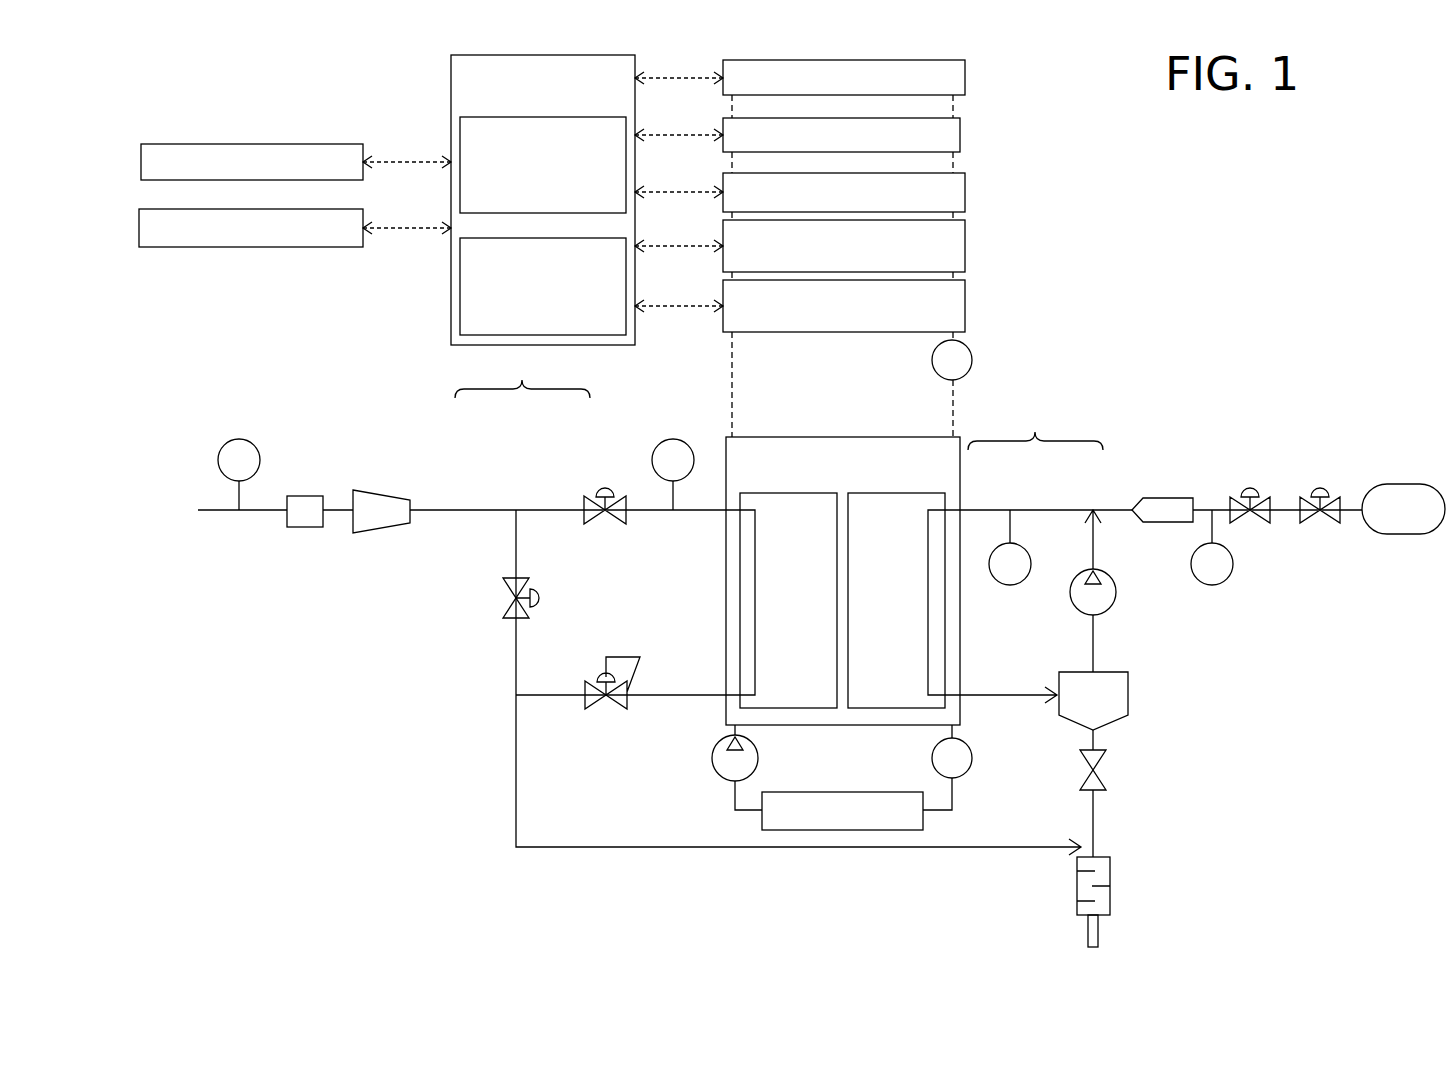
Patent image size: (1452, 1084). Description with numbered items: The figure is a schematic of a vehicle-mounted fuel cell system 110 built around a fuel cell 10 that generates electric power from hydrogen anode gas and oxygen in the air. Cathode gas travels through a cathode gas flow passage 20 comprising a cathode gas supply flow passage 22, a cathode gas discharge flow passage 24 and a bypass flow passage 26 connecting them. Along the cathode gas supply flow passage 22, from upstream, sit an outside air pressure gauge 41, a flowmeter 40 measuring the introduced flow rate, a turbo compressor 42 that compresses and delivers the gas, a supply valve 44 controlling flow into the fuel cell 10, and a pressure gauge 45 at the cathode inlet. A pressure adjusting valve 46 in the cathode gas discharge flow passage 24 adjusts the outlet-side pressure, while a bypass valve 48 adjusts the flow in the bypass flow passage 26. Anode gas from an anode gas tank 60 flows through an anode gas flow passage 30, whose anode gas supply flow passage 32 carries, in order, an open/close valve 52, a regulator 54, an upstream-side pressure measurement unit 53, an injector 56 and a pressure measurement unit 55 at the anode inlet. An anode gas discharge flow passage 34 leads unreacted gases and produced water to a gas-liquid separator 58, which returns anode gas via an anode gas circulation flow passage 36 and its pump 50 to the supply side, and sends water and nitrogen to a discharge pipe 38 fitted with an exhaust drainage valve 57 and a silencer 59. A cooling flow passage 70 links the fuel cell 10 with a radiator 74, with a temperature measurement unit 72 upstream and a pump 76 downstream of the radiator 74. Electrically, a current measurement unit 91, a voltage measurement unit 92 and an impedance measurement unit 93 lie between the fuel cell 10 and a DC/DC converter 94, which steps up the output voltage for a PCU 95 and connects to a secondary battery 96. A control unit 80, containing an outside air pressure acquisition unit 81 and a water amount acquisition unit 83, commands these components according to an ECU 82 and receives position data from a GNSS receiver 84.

The fuel cell 10 is at (840, 437).
The cathode gas flow passage 20 is at (522, 373).
The cathode gas supply flow passage 22 is at (516, 510).
The cathode gas discharge flow passage 24 is at (575, 693).
The bypass flow passage 26 is at (514, 547).
The anode gas flow passage 30 is at (1035, 425).
The anode gas supply flow passage 32 is at (1032, 510).
The anode gas discharge flow passage 34 is at (977, 693).
The anode gas circulation flow passage 36 is at (1090, 547).
The discharge pipe 38 is at (1100, 928).
The flowmeter 40 is at (305, 496).
The outside air pressure gauge 41 is at (240, 439).
The turbo compressor 42 is at (382, 490).
The supply valve 44 is at (605, 488).
The pressure gauge 45 is at (673, 439).
The pressure adjusting valve 46 is at (600, 677).
The bypass valve 48 is at (503, 603).
The pump 50 is at (1110, 575).
The open/close valve 52 is at (1320, 487).
The upstream-side pressure measurement unit 53 is at (1212, 585).
The regulator 54 is at (1250, 487).
The pressure measurement unit 55 is at (1010, 585).
The injector 56 is at (1168, 497).
The exhaust drainage valve 57 is at (1106, 780).
The gas-liquid separator 58 is at (1130, 692).
The silencer 59 is at (1112, 880).
The anode gas tank 60 is at (1400, 484).
The cooling flow passage 70 is at (926, 814).
The temperature measurement unit 72 is at (973, 757).
The radiator 74 is at (790, 792).
The pump 76 is at (711, 758).
The control unit 80 is at (451, 116).
The outside air pressure acquisition unit 81 is at (585, 117).
The ECU 82 is at (141, 163).
The water amount acquisition unit 83 is at (585, 238).
The GNSS receiver 84 is at (139, 229).
The current measurement unit 91 is at (973, 359).
The voltage measurement unit 92 is at (966, 305).
The impedance measurement unit 93 is at (966, 245).
The DC/DC converter 94 is at (966, 191).
The PCU 95 is at (961, 134).
The secondary battery 96 is at (966, 77).
The fuel cell system 110 is at (1165, 360).